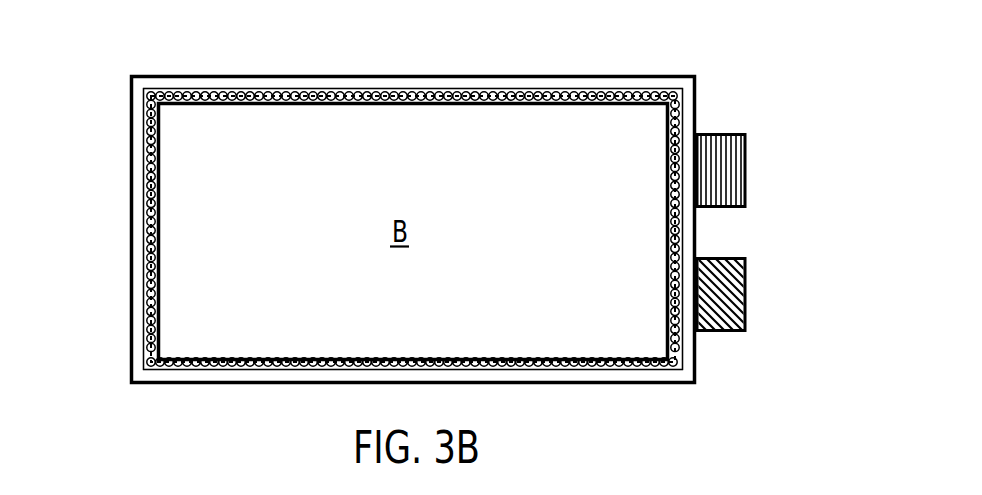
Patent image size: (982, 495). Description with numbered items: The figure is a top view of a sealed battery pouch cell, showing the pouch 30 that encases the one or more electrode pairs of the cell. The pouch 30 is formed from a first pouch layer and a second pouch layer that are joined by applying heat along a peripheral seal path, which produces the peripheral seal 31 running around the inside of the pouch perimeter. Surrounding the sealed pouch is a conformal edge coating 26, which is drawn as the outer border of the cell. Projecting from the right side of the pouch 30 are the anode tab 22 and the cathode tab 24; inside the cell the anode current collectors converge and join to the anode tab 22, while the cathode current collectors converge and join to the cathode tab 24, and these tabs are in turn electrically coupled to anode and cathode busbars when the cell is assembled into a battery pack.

The sealed pouch 30 is at (727, 70).
The conformal edge coating 26 is at (141, 90).
The peripheral seal 31 is at (146, 135).
The anode tab 22 is at (732, 167).
The cathode tab 24 is at (747, 291).